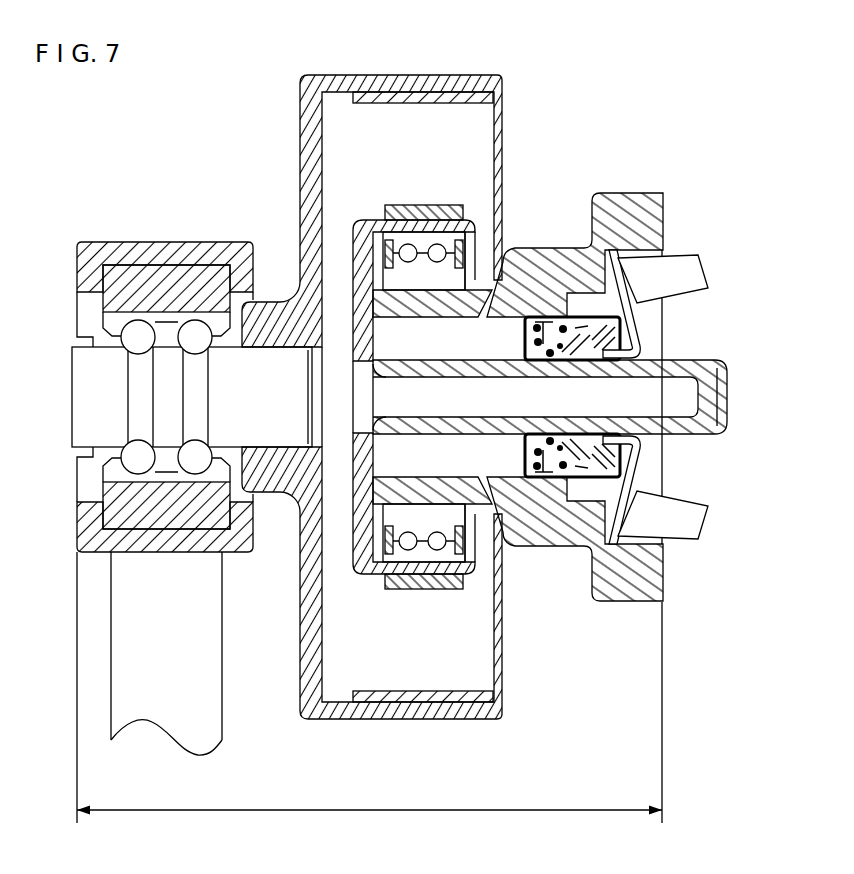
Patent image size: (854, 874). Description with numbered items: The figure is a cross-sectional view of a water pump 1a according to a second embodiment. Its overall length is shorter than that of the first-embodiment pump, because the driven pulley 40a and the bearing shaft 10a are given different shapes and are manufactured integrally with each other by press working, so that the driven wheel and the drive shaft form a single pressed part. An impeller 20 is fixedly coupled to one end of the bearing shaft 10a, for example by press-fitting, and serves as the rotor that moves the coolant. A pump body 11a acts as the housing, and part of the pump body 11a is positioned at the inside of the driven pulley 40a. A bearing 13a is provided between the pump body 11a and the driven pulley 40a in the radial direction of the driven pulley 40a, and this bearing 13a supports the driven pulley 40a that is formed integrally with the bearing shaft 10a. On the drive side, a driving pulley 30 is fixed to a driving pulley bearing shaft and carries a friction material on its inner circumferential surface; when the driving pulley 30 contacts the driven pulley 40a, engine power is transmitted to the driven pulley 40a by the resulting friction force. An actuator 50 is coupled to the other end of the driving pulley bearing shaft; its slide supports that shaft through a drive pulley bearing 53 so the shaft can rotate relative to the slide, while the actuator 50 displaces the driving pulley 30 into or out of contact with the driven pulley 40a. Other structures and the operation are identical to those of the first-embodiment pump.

The water pump 1a is at (652, 136).
The bearing shaft 10a is at (655, 366).
The pump body 11a is at (531, 255).
The bearing 13a is at (430, 557).
The impeller 20 is at (683, 268).
The driving pulley 30 is at (298, 175).
The driven pulley 40a is at (447, 223).
The actuator 50 is at (133, 240).
The drive pulley bearing 53 is at (163, 473).